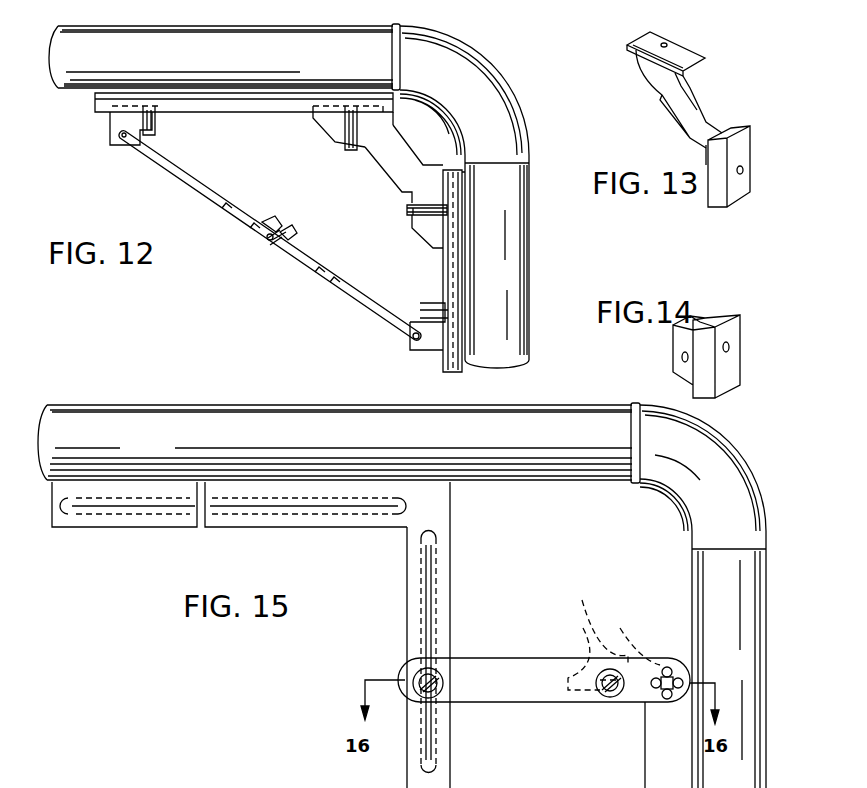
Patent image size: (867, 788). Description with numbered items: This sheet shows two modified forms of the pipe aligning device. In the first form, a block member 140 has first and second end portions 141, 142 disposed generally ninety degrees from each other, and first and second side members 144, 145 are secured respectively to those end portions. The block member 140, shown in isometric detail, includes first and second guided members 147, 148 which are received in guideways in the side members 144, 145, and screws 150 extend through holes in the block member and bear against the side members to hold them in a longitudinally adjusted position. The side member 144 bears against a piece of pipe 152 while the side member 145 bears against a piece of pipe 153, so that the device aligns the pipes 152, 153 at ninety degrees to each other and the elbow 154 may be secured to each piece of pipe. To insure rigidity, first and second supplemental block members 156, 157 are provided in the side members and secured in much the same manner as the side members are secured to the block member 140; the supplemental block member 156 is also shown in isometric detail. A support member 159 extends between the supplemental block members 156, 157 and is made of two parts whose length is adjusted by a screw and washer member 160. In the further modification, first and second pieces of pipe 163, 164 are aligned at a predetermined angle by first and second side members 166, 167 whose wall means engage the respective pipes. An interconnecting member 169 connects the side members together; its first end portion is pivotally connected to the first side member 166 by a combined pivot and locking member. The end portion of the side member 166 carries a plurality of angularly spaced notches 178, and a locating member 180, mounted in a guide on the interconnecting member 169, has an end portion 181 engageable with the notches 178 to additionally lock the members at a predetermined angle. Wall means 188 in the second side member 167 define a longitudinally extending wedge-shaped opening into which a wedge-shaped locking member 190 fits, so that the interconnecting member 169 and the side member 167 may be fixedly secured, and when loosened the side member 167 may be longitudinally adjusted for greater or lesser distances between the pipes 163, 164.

In FIG. 12, the block member 140 is at (407, 156).
In FIG. 13, the block member 140 is at (681, 127).
In FIG. 12, the first end portion 141 is at (418, 232).
In FIG. 12, the second end portion 142 is at (330, 138).
In FIG. 12, the first side member 144 is at (445, 274).
In FIG. 12, the second side member 145 is at (205, 112).
In FIG. 13, the first guided member 147 is at (740, 192).
In FIG. 13, the second guided member 148 is at (628, 46).
In FIG. 12, the screws 150 is at (352, 152).
In FIG. 12, the pipe 152 is at (520, 268).
In FIG. 12, the pipe 153 is at (157, 32).
In FIG. 12, the elbow 154 is at (505, 92).
In FIG. 12, the first supplemental block member 156 is at (410, 340).
In FIG. 14, the first supplemental block member 156 is at (680, 350).
In FIG. 12, the second supplemental block member 157 is at (117, 120).
In FIG. 12, the support member 159 is at (202, 194).
In FIG. 12, the screw and washer member 160 is at (280, 224).
In FIG. 15, the first piece of pipe 163 is at (707, 596).
In FIG. 15, the second piece of pipe 164 is at (252, 418).
In FIG. 15, the first side member 166 is at (642, 781).
In FIG. 15, the second side member 167 is at (118, 520).
In FIG. 15, the interconnecting member 169 is at (505, 700).
In FIG. 15, the angularly spaced notches 178 is at (618, 632).
In FIG. 15, the locating member 180 is at (580, 628).
In FIG. 15, the end portion of locating member 181 is at (592, 622).
In FIG. 15, the wall means defining wedge-shaped opening 188 is at (427, 606).
In FIG. 15, the wedge-shaped locking member 190 is at (430, 652).